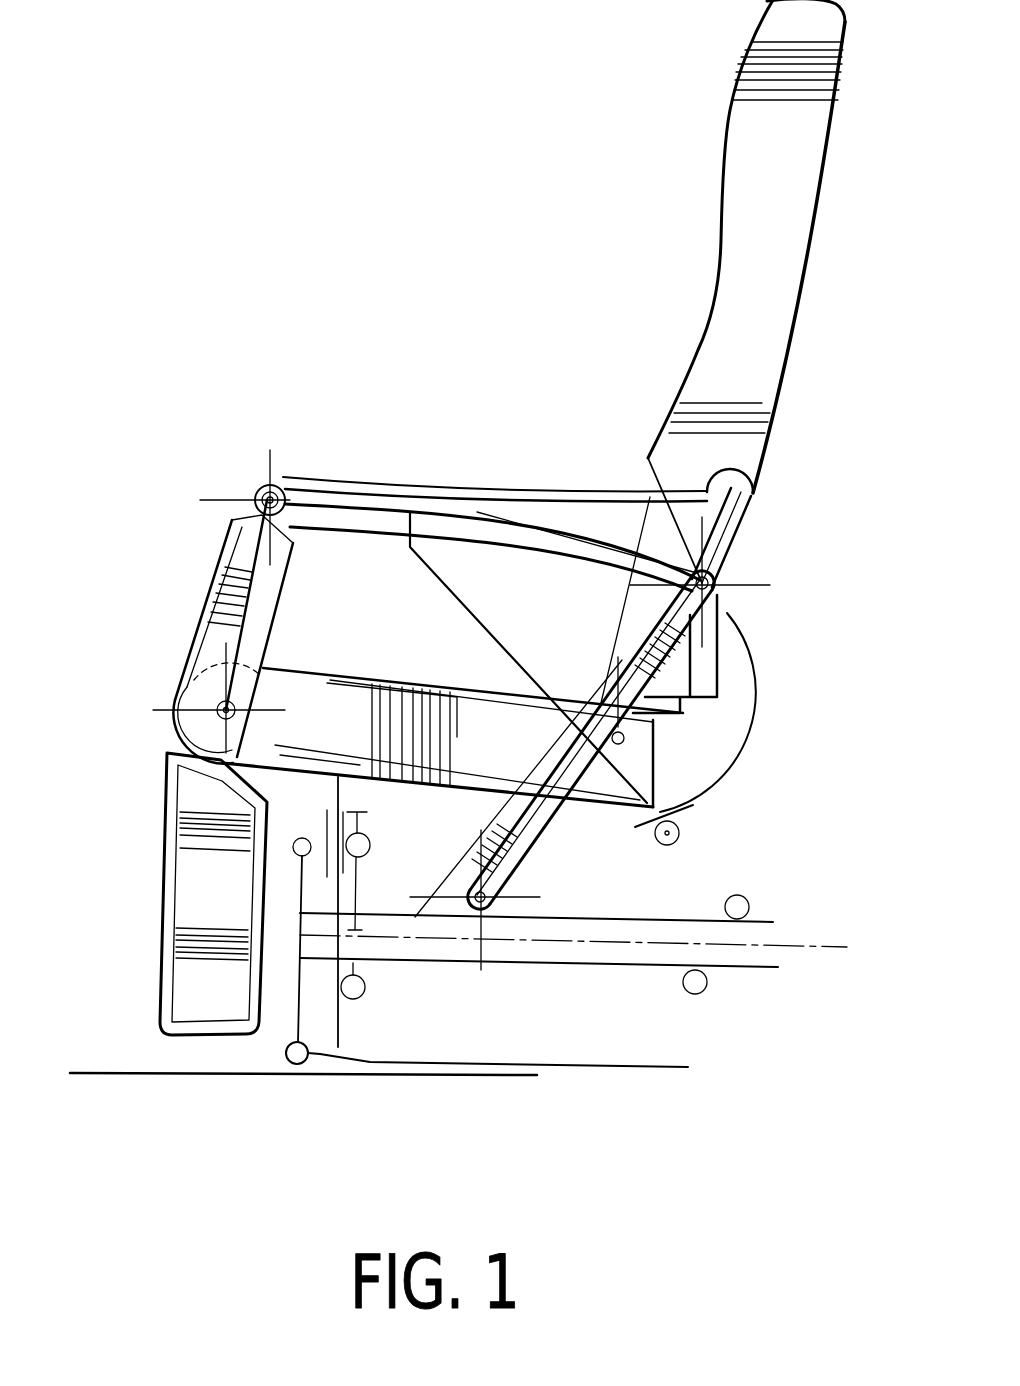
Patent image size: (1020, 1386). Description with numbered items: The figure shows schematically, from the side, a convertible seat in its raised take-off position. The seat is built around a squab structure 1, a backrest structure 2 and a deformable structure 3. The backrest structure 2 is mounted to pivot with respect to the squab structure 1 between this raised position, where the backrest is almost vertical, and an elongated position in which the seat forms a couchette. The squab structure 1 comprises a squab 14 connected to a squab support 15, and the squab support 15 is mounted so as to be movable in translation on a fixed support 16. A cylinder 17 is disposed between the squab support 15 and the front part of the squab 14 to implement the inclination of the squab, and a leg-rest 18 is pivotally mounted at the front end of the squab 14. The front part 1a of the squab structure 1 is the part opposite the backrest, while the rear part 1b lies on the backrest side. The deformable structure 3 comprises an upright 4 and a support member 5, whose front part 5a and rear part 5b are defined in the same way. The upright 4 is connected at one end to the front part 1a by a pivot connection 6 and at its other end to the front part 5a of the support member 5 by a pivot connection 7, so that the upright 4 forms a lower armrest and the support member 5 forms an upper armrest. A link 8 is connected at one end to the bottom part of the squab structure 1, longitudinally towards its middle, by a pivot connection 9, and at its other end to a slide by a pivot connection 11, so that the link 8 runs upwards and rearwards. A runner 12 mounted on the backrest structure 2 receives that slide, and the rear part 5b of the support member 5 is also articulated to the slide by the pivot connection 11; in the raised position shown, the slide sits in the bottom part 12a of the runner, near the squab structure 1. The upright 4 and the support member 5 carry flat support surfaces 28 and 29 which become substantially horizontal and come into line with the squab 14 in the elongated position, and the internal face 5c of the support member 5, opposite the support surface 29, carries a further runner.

The squab structure 1 is at (298, 660).
The front part of the squab structure 1a is at (335, 660).
The rear part of the squab structure 1b is at (563, 690).
The backrest structure 2 is at (781, 283).
The deformable structure 3 is at (288, 405).
The upright 4 is at (227, 546).
The support member 5 is at (446, 486).
The front part of the support member 5a is at (262, 486).
The rear part of the support member 5b is at (645, 497).
The internal face of the support member 5c is at (510, 548).
The pivot connection 6 is at (217, 702).
The pivot connection 7 is at (253, 494).
The link 8 is at (557, 813).
The pivot connection 9 is at (497, 867).
The pivot connection 11 is at (712, 598).
The runner 12 is at (757, 487).
The bottom part of the runner 12a is at (725, 557).
The squab 14 is at (383, 692).
The squab support 15 is at (300, 987).
The fixed support 16 is at (733, 953).
The cylinder 17 is at (303, 888).
The leg-rest 18 is at (165, 835).
The flat support surface 28 is at (366, 480).
The flat support surface 29 is at (208, 617).